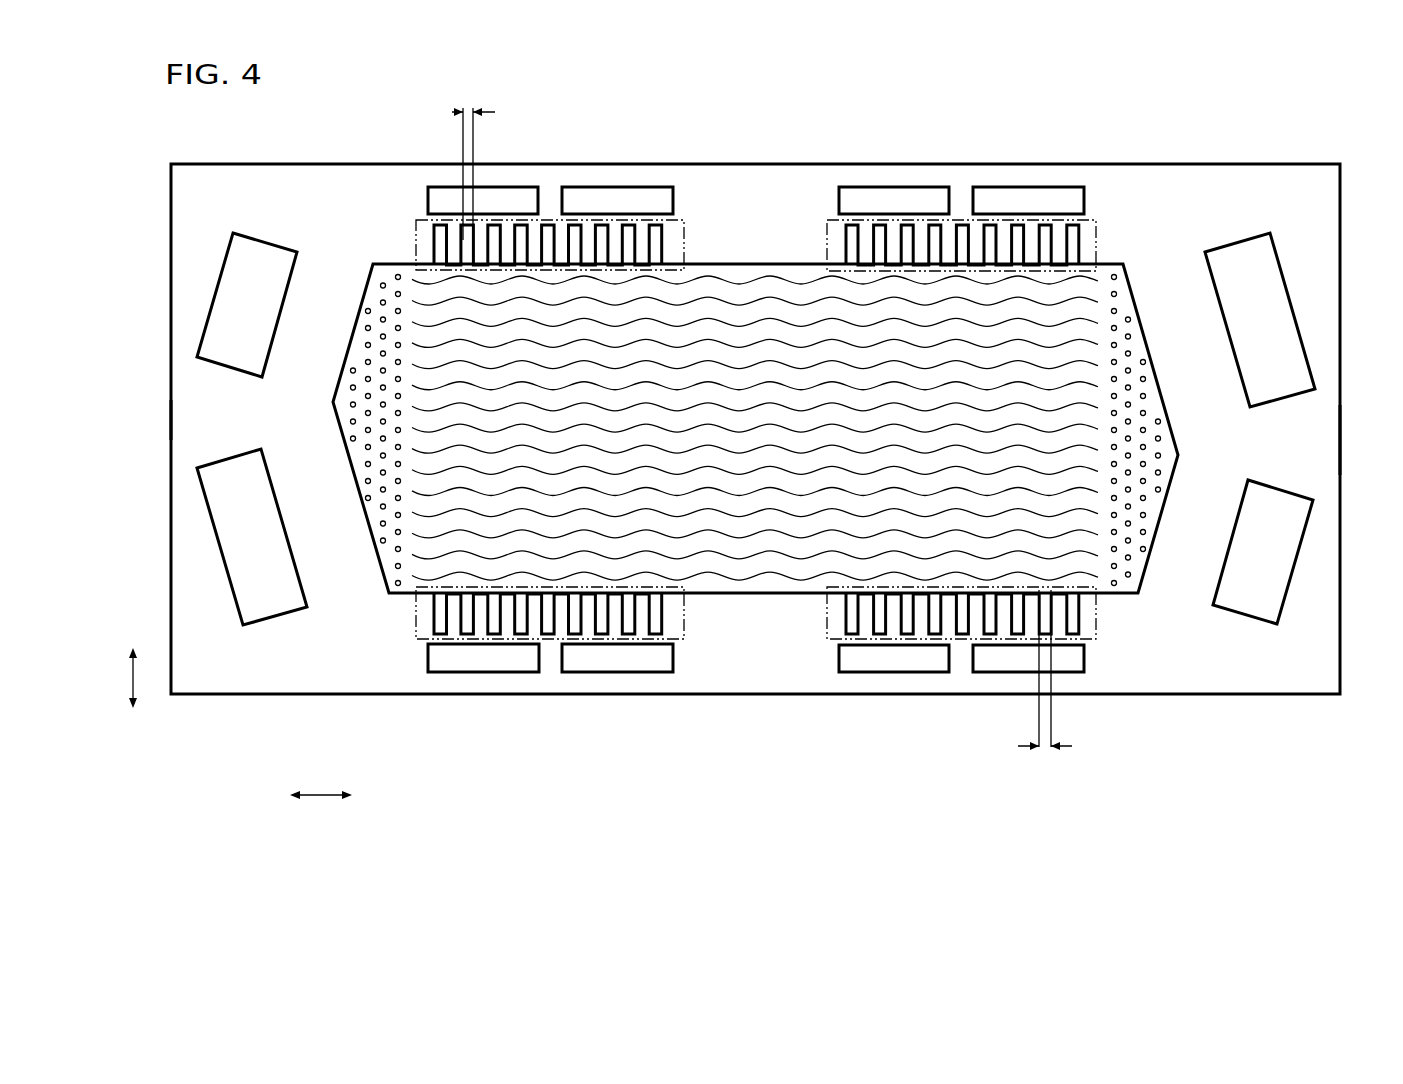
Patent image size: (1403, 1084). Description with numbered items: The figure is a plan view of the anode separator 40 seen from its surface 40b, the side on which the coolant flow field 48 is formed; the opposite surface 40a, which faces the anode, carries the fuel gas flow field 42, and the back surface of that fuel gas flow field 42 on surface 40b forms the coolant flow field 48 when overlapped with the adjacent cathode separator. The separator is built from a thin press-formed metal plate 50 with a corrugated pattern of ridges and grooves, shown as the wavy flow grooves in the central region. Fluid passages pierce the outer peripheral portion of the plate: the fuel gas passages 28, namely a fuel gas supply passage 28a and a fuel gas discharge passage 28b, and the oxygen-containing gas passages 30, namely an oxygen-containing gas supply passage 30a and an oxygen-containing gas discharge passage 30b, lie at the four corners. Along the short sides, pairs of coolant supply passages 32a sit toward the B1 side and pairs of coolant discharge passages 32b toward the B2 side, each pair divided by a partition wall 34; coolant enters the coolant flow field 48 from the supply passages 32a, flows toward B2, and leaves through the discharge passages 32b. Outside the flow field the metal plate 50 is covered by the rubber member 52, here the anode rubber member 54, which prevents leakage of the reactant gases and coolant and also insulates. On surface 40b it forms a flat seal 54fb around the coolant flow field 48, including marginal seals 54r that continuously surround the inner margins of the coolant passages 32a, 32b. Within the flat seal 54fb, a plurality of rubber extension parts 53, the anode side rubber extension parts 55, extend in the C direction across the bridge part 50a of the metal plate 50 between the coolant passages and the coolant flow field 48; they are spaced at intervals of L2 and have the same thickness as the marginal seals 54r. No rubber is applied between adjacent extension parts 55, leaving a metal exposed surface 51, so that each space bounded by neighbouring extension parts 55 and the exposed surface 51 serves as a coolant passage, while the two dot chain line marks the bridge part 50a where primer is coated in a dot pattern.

The anode separator 40 is at (1151, 100).
The surface 40a is at (1318, 460).
The surface 40b is at (1318, 424).
The fuel gas passages 28 is at (755, 431).
The fuel gas supply passage 28a is at (250, 258).
The fuel gas discharge passage 28b is at (1255, 597).
The oxygen-containing gas passages 30 is at (756, 428).
The oxygen-containing gas supply passage 30a is at (1241, 258).
The oxygen-containing gas discharge passage 30b is at (258, 605).
The coolant supply passages 32a is at (928, 197).
The coolant discharge passages 32b is at (516, 197).
The partition wall 34 is at (551, 197).
The fuel gas flow field 42 is at (755, 538).
The coolant flow field 48 is at (788, 550).
The metal plate 50 is at (755, 447).
The bridge part 50a is at (413, 237).
The metal exposed surface 51 is at (440, 237).
The rubber member 52 is at (755, 492).
The rubber extension parts 53 is at (767, 429).
The anode rubber member 54 is at (719, 694).
The marginal seals 54r is at (767, 448).
The flat seal 54fb is at (200, 420).
The anode side rubber extension parts 55 is at (767, 418).